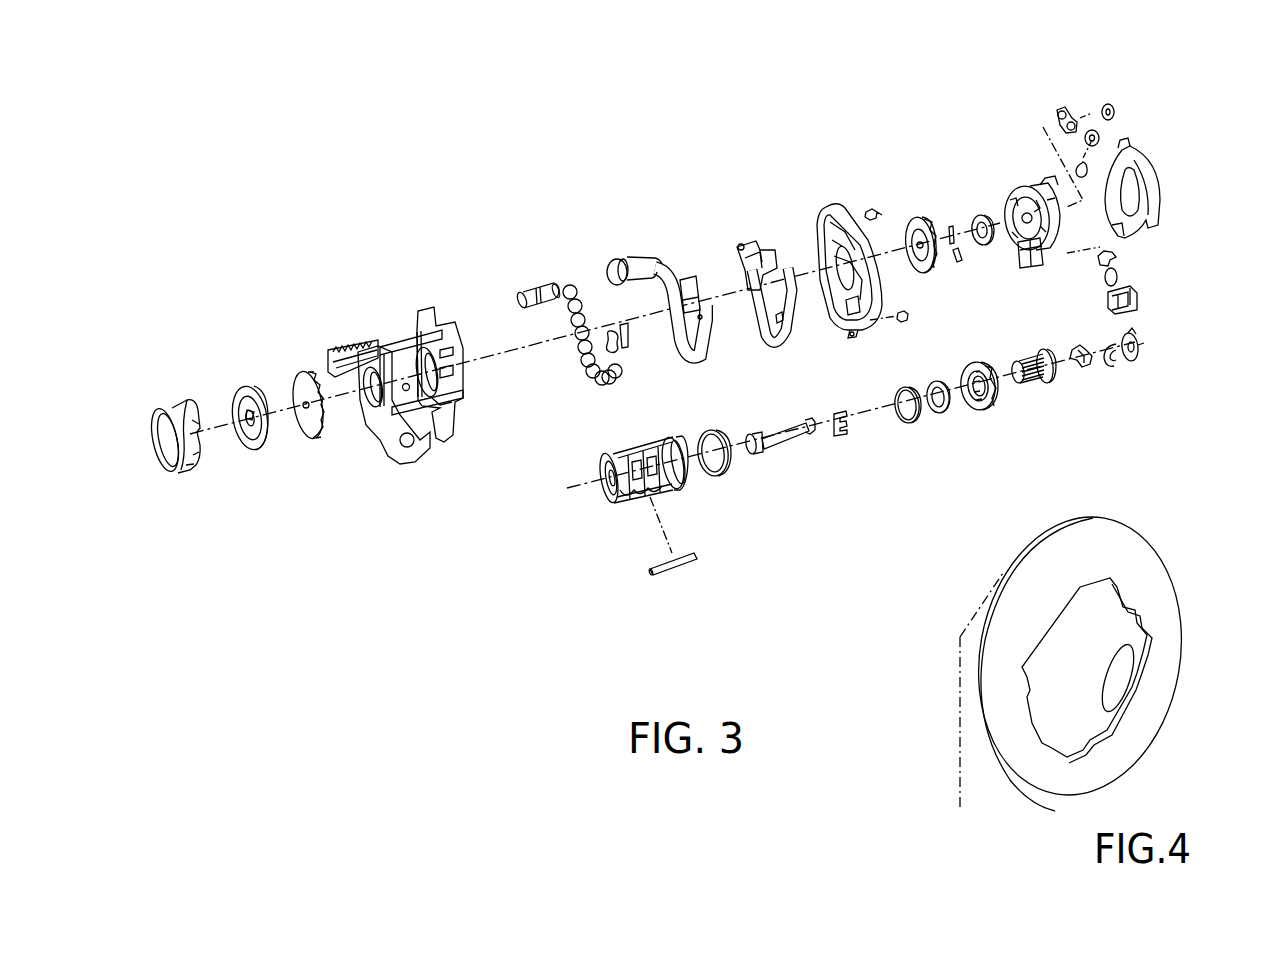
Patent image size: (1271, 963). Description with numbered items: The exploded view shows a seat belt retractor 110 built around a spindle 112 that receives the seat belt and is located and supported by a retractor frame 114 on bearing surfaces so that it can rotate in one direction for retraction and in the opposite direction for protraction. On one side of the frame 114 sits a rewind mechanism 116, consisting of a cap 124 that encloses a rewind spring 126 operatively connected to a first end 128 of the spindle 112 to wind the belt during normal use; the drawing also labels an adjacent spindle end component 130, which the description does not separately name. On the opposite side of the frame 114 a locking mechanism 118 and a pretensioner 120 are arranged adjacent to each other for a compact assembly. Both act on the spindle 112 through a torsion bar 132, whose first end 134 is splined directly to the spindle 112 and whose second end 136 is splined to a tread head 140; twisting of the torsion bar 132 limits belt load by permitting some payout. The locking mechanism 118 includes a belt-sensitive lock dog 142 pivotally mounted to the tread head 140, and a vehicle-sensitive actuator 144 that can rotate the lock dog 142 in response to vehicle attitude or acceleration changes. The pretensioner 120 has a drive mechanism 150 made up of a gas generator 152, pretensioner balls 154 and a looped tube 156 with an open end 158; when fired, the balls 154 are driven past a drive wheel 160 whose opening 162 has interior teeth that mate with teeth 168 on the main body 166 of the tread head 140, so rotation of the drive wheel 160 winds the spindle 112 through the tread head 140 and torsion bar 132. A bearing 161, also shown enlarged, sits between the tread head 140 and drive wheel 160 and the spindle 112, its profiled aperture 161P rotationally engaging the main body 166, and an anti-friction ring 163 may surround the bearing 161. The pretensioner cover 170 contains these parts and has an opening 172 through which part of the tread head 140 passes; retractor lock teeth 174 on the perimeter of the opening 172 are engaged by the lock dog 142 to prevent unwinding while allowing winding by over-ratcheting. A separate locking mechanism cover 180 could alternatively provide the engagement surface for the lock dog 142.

In FIG. 3, the retractor 110 is at (620, 122).
In FIG. 3, the spindle 112 is at (625, 497).
In FIG. 3, the retractor frame 114 is at (420, 313).
In FIG. 3, the rewind mechanism 116 is at (208, 385).
In FIG. 3, the locking mechanism 118 is at (1150, 330).
In FIG. 3, the pretensioner 120 is at (634, 250).
In FIG. 3, the cap 124 is at (172, 465).
In FIG. 3, the rewind spring 126 is at (258, 450).
In FIG. 3, the first end 128 is at (603, 460).
In FIG. 3, the end cap 130 is at (667, 440).
In FIG. 3, the torsion bar 132 is at (777, 445).
In FIG. 3, the first end 134 is at (758, 455).
In FIG. 3, the second end 136 is at (808, 440).
In FIG. 3, the tread head 140 is at (1037, 393).
In FIG. 3, the lock dog 142 is at (1085, 368).
In FIG. 3, the vehicle-sensitive actuator 144 is at (1073, 285).
In FIG. 3, the drive mechanism 150 is at (527, 324).
In FIG. 3, the gas generator 152 is at (546, 290).
In FIG. 3, the pretensioner balls 154 is at (590, 373).
In FIG. 3, the tube 156 is at (688, 360).
In FIG. 3, the open end 158 is at (700, 300).
In FIG. 3, the drive wheel 160 is at (973, 410).
In FIG. 3, the bearing 161 is at (933, 411).
In FIG. 4, the bearing 161 is at (1007, 710).
In FIG. 4, the profiled aperture 161P is at (1113, 712).
In FIG. 3, the opening 162 is at (968, 405).
In FIG. 3, the anti-friction ring 163 is at (907, 422).
In FIG. 3, the main body 166 is at (1023, 387).
In FIG. 3, the teeth 168 is at (1027, 367).
In FIG. 3, the cover 170 is at (850, 208).
In FIG. 3, the opening 172 is at (834, 312).
In FIG. 3, the retractor lock teeth 174 is at (843, 260).
In FIG. 3, the locking mechanism cover 180 is at (1145, 170).